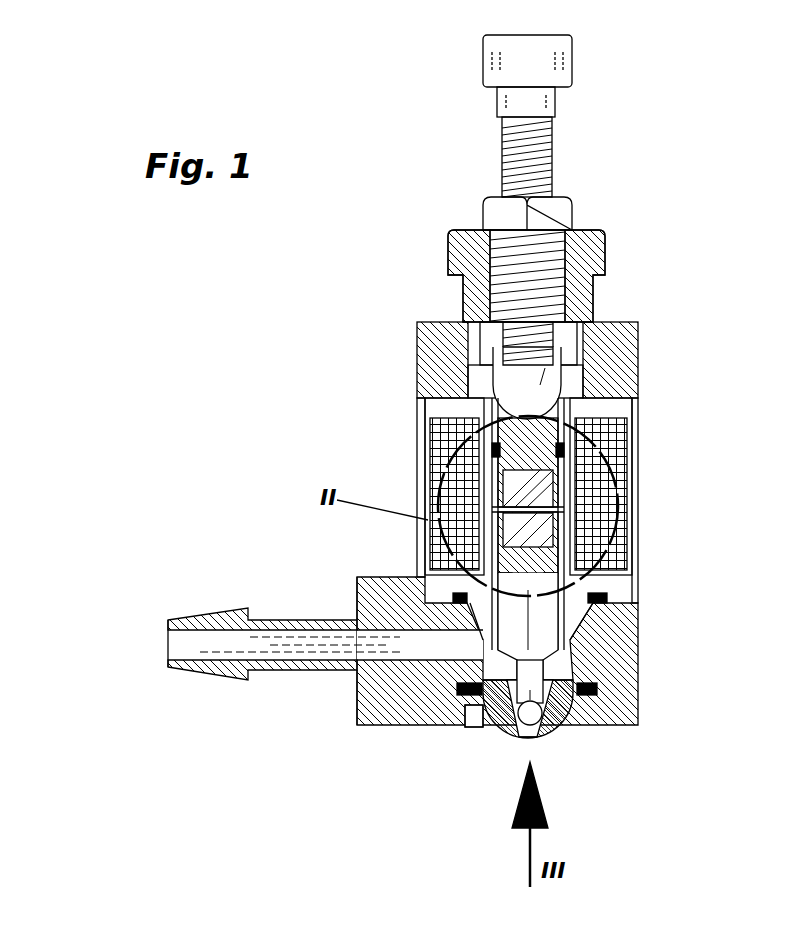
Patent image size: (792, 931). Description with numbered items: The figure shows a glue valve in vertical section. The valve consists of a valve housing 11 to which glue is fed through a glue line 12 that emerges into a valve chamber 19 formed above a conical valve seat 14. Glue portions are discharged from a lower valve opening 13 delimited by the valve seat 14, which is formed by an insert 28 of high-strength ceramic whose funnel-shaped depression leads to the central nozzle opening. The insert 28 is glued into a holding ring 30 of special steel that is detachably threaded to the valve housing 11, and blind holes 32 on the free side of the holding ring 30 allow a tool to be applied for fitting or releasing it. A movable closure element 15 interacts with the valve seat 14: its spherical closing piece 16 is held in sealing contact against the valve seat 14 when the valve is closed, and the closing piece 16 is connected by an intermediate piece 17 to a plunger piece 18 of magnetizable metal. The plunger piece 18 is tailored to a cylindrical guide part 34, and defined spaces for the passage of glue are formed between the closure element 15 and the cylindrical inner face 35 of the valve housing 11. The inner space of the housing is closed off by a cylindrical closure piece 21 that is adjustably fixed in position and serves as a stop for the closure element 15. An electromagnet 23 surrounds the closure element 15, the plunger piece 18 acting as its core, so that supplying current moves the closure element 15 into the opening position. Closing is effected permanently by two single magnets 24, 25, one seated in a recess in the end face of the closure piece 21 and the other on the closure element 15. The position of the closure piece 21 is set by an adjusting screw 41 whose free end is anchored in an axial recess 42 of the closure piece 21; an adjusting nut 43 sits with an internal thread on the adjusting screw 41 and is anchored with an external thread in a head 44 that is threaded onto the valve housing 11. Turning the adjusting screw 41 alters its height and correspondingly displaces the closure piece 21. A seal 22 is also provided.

The valve housing 11 is at (400, 407).
The glue line 12 is at (262, 643).
The valve opening 13 is at (532, 742).
The valve seat 14 is at (560, 735).
The closure element 15 is at (375, 727).
The closing piece 16 is at (605, 688).
The intermediate piece 17 is at (543, 690).
The plunger piece 18 is at (550, 625).
The valve chamber 19 is at (360, 590).
The closure piece 21 is at (428, 463).
The seal 22 is at (548, 468).
The electromagnet 23 is at (428, 543).
The single magnet 24 is at (566, 505).
The single magnet 25 is at (634, 528).
The insert 28 is at (500, 748).
The holding ring 30 is at (617, 727).
The blind hole 32 is at (470, 723).
The guide part 34 is at (450, 393).
The inner face 35 is at (548, 532).
The adjusting screw 41 is at (555, 152).
The recess 42 is at (552, 412).
The adjusting nut 43 is at (555, 212).
The head 44 is at (595, 243).